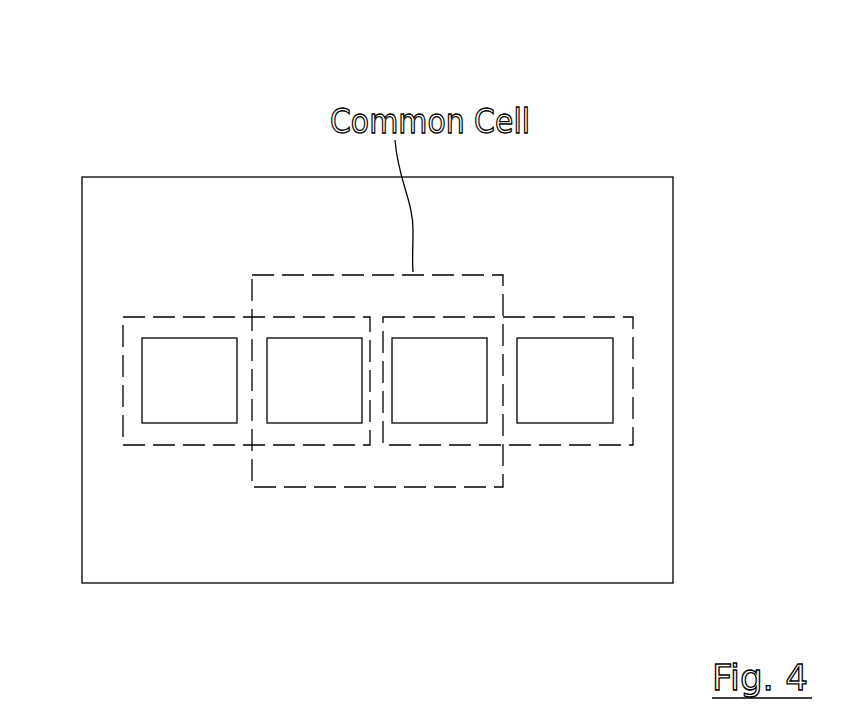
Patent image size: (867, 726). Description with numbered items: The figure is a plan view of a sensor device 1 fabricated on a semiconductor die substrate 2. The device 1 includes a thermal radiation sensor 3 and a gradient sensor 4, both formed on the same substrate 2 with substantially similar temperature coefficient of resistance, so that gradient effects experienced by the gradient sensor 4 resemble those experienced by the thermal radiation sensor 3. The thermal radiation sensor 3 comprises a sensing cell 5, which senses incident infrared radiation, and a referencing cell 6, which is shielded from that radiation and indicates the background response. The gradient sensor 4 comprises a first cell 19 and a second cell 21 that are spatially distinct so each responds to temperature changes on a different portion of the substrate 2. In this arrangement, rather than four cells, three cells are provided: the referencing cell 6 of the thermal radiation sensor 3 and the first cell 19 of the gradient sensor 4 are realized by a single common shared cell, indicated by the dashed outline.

The sensor device 1 is at (590, 122).
The semiconductor die substrate 2 is at (595, 522).
The thermal radiation sensor 3 is at (145, 316).
The gradient sensor 4 is at (610, 317).
The sensing cell 5 is at (160, 382).
The referencing cell 6 is at (310, 345).
The first cell 19 is at (428, 410).
The second cell 21 is at (595, 383).